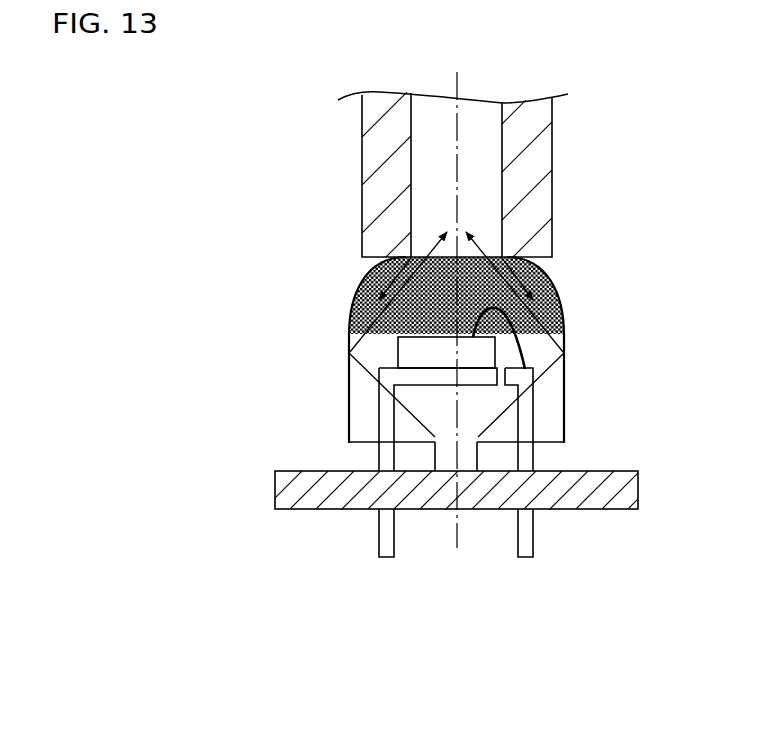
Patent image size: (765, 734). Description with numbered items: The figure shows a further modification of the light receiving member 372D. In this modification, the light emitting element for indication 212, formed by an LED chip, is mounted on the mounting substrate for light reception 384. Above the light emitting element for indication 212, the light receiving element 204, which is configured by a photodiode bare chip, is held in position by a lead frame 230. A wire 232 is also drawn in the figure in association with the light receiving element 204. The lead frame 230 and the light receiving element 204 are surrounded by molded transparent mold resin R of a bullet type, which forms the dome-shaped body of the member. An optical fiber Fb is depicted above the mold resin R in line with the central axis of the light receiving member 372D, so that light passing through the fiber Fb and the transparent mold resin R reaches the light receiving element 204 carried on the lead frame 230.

The optical fiber Fb is at (552, 160).
The light receiving member 372D is at (238, 280).
The light receiving element 204 is at (410, 350).
The wire 232 is at (513, 318).
The mold resin R is at (350, 428).
The mounting substrate for light reception 384 is at (276, 482).
The lead frame 230 is at (388, 537).
The light emitting element for indication 212 is at (447, 462).